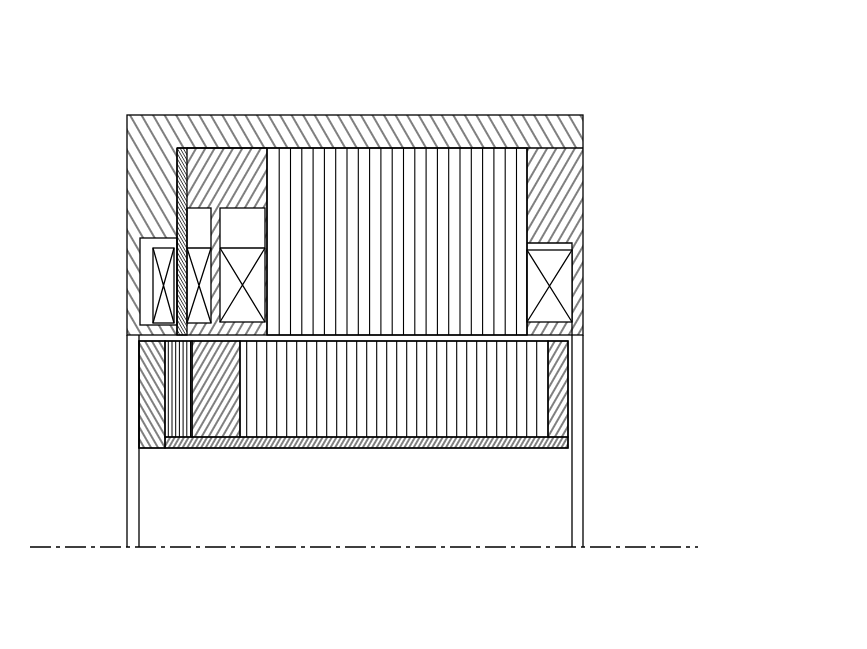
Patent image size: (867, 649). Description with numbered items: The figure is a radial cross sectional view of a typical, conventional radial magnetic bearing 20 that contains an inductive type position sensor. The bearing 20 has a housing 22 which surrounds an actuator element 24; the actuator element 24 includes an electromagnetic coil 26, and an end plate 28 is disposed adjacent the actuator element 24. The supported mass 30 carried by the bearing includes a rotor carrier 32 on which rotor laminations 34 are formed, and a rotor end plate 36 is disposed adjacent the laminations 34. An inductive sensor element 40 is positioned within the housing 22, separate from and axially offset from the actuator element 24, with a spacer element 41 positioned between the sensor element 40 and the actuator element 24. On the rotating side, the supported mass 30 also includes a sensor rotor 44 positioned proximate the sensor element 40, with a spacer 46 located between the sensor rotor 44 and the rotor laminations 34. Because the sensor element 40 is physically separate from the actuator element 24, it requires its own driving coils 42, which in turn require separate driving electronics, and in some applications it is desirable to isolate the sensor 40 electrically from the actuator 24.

The radial magnetic bearing 20 is at (121, 62).
The housing 22 is at (583, 128).
The actuator element 24 is at (453, 193).
The electromagnetic coil 26 is at (562, 289).
The end plate 28 is at (403, 225).
The supported mass 30 is at (392, 397).
The rotor carrier 32 is at (598, 436).
The rotor laminations 34 is at (500, 387).
The rotor end plate 36 is at (572, 411).
The inductive sensor element 40 is at (178, 222).
The spacer element 41 is at (222, 175).
The driving coils 42 is at (158, 283).
The sensor rotor 44 is at (182, 385).
The spacer 46 is at (215, 418).